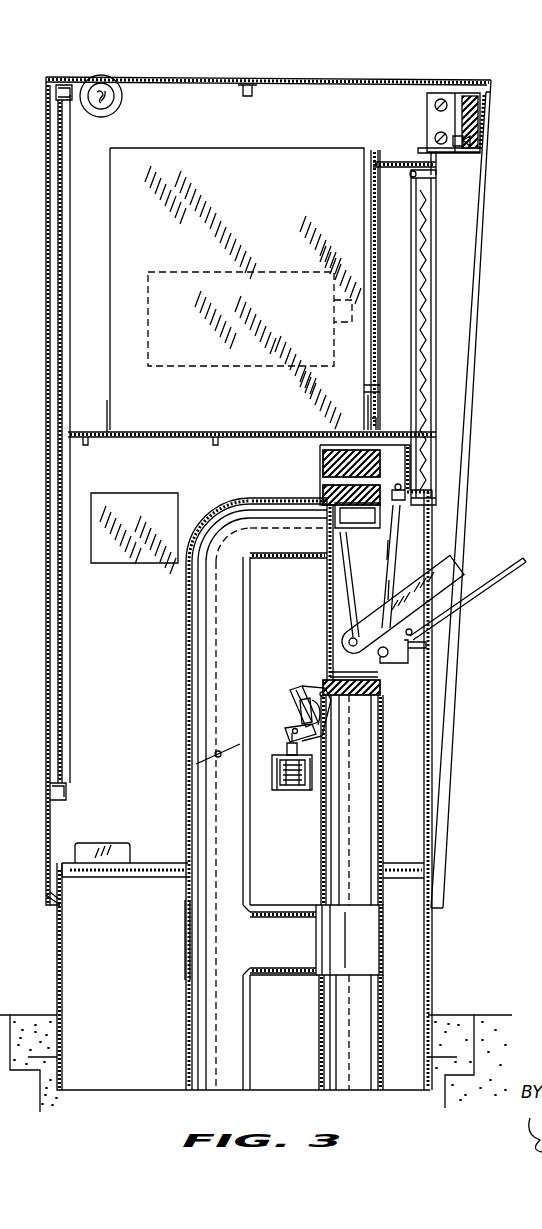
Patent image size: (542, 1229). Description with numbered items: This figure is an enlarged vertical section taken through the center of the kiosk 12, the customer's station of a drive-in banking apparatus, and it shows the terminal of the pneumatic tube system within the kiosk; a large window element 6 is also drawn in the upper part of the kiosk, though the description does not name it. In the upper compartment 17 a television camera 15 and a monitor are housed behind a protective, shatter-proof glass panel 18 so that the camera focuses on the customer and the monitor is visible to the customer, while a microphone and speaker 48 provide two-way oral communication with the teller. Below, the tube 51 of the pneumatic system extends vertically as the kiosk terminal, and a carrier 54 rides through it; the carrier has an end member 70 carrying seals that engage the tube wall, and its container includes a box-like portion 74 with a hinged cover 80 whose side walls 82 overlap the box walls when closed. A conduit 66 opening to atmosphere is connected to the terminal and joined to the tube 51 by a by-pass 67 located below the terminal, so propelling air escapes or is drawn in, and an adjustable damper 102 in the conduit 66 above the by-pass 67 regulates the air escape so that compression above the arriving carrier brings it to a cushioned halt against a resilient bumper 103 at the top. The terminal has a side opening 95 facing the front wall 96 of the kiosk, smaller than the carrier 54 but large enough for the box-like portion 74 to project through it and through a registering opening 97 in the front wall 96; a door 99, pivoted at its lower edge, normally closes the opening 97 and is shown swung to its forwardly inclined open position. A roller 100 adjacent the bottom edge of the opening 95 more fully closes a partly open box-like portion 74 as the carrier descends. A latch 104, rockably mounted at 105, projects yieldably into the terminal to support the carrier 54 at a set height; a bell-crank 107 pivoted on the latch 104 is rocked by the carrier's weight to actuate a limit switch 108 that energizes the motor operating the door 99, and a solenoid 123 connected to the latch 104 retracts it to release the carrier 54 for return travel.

The kiosk 12 is at (366, 64).
The upper compartment 17 is at (88, 150).
The window glass 6 is at (280, 148).
The television camera 15 is at (278, 272).
The microphone and speaker 48 is at (462, 135).
The glass panel 18 is at (424, 218).
The resilient bumper 103 is at (385, 475).
The opening 97 is at (435, 516).
The opening 95 is at (386, 541).
The carrier 54 is at (372, 568).
The door 99 is at (468, 598).
The box-like portion 74 is at (433, 601).
The roller 100 is at (385, 658).
The end member 70 is at (326, 525).
The side walls 82 is at (352, 567).
The cover 80 is at (347, 590).
The conduit 66 is at (233, 632).
The limit switch 108 is at (300, 690).
The bell-crank 107 is at (300, 700).
The latch 104 is at (306, 731).
The pivot 105 is at (290, 743).
The damper 102 is at (200, 762).
The solenoid 123 is at (297, 788).
The front wall 96 is at (431, 776).
The tube 51 is at (383, 820).
The by-pass 67 is at (298, 912).